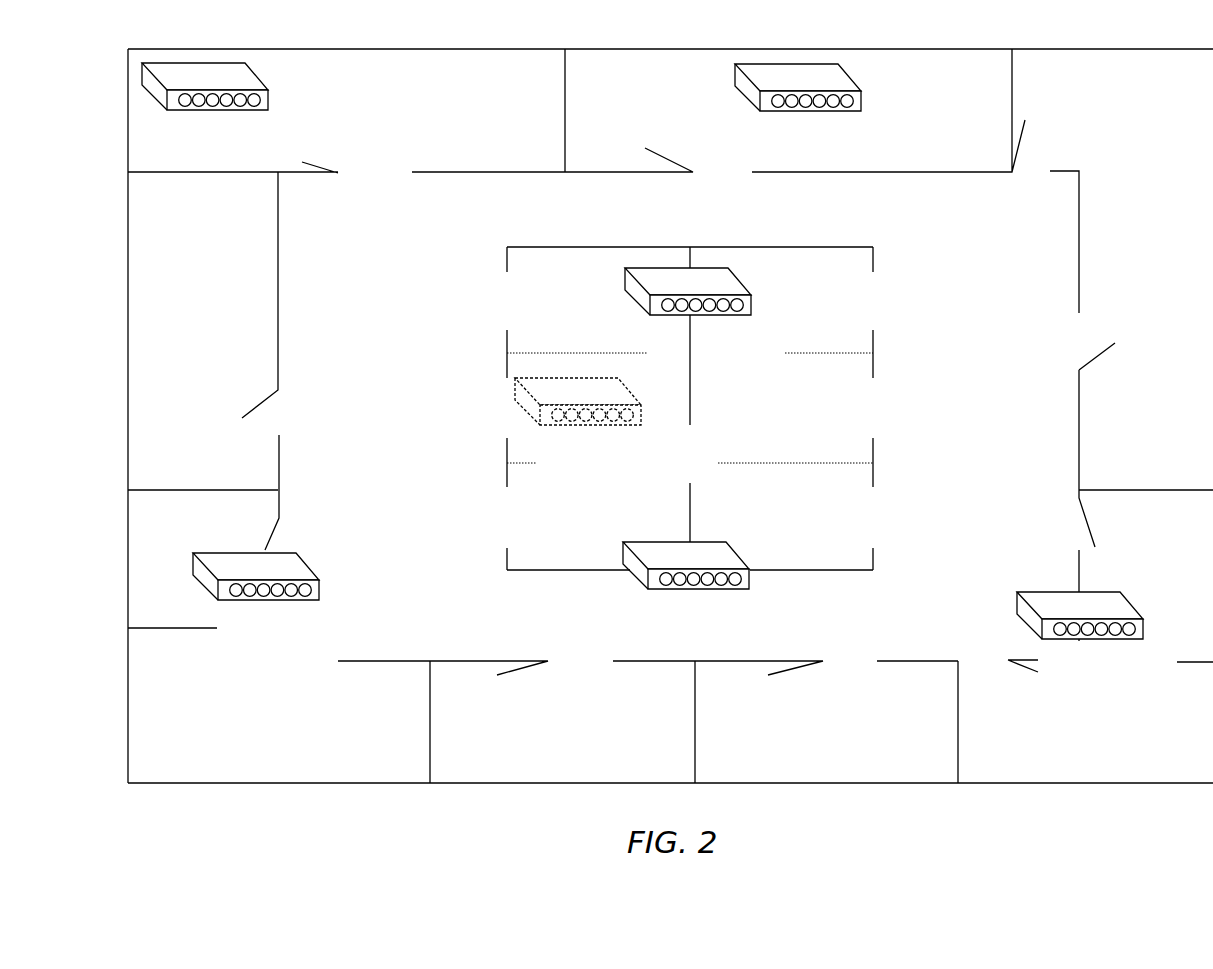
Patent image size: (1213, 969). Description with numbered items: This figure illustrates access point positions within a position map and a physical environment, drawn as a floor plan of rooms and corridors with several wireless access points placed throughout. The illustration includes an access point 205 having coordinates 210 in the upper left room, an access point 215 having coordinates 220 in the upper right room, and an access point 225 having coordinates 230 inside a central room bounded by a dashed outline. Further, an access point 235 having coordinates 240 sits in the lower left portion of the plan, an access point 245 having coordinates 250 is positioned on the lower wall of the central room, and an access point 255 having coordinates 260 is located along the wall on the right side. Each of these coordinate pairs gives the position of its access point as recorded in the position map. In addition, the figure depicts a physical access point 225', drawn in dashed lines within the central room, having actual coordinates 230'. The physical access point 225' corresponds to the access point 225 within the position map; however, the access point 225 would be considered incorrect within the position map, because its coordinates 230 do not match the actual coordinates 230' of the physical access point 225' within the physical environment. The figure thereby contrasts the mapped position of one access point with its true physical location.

The access point 205 is at (205, 99).
The coordinates 210 is at (237, 150).
The access point 215 is at (798, 100).
The coordinates 220 is at (830, 152).
The access point 225 is at (688, 303).
The coordinates 230 is at (719, 354).
The physical access point 225' is at (619, 414).
The actual coordinates 230' is at (618, 465).
The access point 235 is at (256, 588).
The coordinates 240 is at (289, 638).
The access point 245 is at (686, 577).
The coordinates 250 is at (717, 628).
The access point 255 is at (1080, 629).
The coordinates 260 is at (1112, 682).